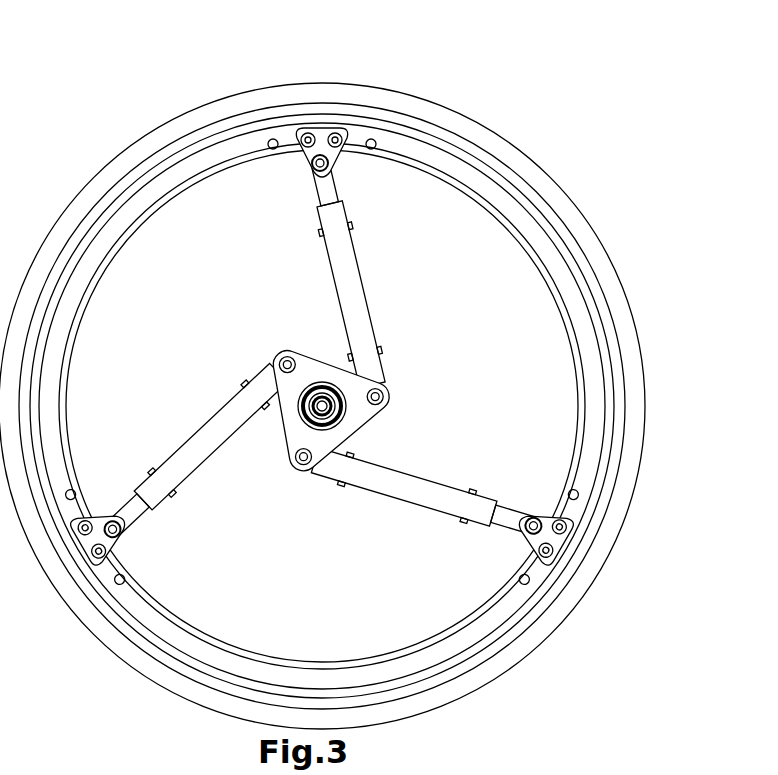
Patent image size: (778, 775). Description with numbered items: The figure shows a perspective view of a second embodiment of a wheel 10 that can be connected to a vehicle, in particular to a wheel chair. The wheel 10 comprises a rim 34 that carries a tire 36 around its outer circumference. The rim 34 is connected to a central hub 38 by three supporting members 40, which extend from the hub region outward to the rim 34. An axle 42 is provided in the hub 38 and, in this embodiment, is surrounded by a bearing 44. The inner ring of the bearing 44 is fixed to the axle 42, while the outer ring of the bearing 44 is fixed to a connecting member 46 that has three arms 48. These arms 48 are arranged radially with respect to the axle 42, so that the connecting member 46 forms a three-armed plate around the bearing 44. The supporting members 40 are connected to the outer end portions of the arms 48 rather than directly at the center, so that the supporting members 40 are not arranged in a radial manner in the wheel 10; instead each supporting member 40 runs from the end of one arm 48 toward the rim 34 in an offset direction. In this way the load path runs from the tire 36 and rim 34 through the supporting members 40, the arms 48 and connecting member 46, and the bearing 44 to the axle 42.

The wheel 10 is at (521, 123).
The rim 34 is at (530, 223).
The tire 36 is at (550, 193).
The hub 38 is at (373, 434).
The supporting members 40 is at (298, 257).
The axle 42 is at (298, 432).
The bearing 44 is at (328, 383).
The connecting member 46 is at (272, 416).
The arms 48 is at (298, 375).